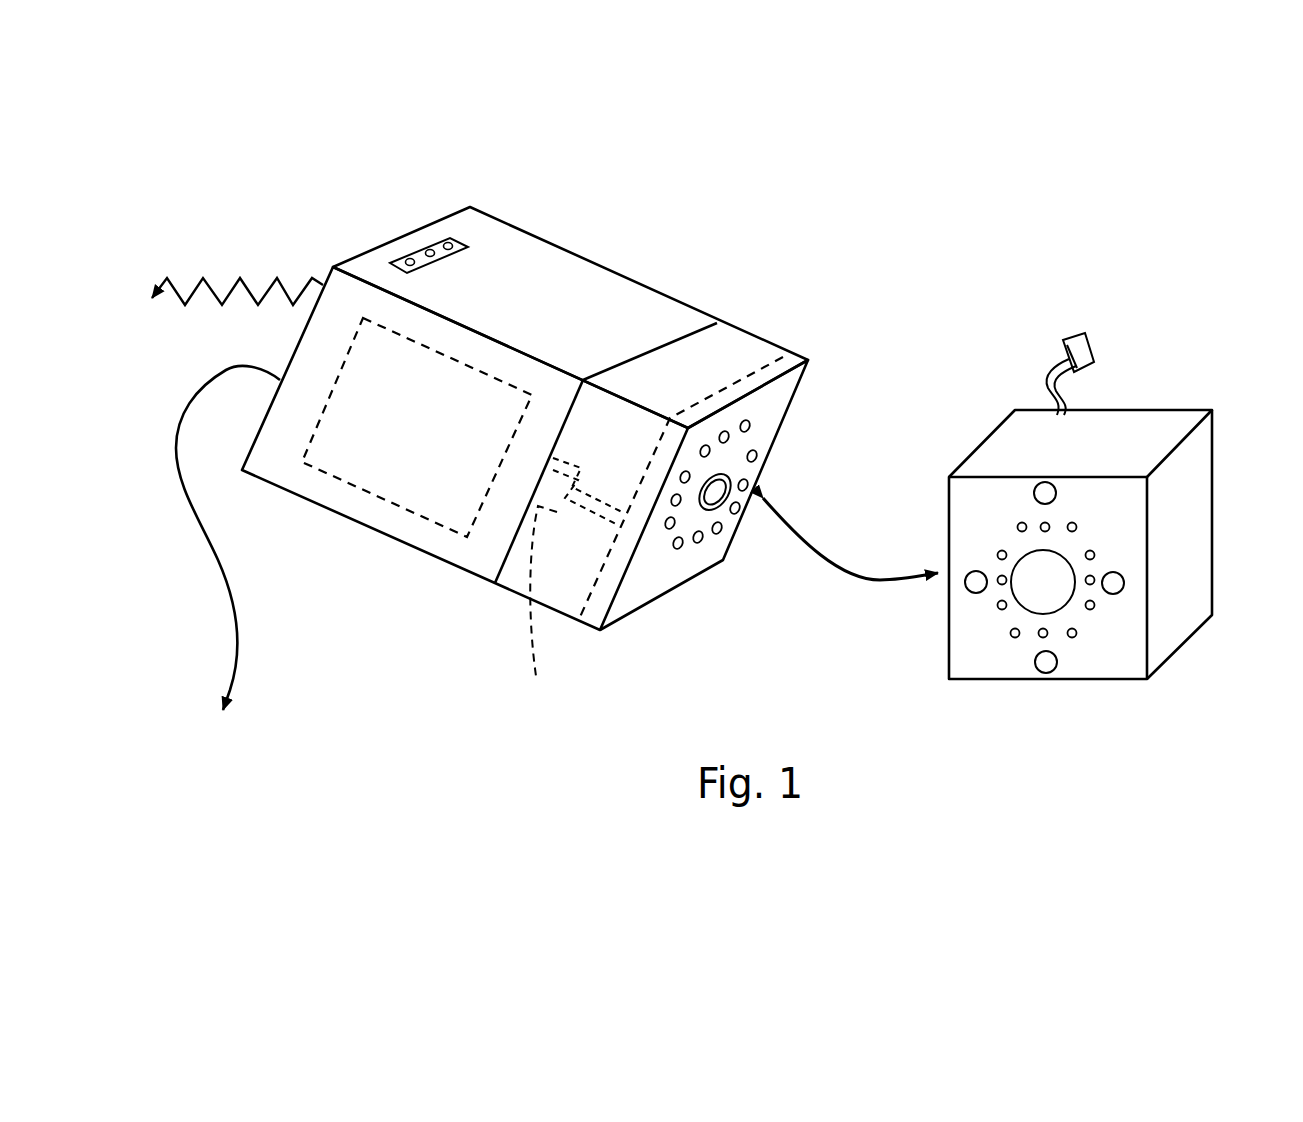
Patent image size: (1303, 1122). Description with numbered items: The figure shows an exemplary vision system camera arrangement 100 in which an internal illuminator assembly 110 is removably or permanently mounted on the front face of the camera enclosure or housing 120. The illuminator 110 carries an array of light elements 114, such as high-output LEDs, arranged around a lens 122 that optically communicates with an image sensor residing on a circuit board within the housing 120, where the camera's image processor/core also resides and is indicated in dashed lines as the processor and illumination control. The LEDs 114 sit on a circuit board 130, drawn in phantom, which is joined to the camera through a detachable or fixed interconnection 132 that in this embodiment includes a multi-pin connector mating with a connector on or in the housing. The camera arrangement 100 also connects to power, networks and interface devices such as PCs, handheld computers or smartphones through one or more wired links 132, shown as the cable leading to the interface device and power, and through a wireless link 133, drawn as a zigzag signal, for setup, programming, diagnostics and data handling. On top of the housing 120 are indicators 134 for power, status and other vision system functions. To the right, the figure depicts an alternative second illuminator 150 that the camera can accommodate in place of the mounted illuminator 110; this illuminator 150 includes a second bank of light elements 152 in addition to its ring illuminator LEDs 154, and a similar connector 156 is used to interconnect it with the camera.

The vision system camera arrangement 100 is at (634, 240).
The internal illuminator assembly 110 is at (752, 348).
The light elements 114 is at (729, 431).
The camera enclosure or housing 120 is at (513, 267).
The lens 122 is at (712, 492).
The circuit board 130 is at (723, 392).
The interconnection / wired link 132 is at (226, 592).
The wireless link 133 is at (192, 287).
The indicators 134 is at (421, 250).
The second illuminator 150 is at (1195, 400).
The second bank of light elements 152 is at (975, 571).
The ring illuminator LEDs 154 is at (1094, 578).
The connector 156 is at (1086, 336).